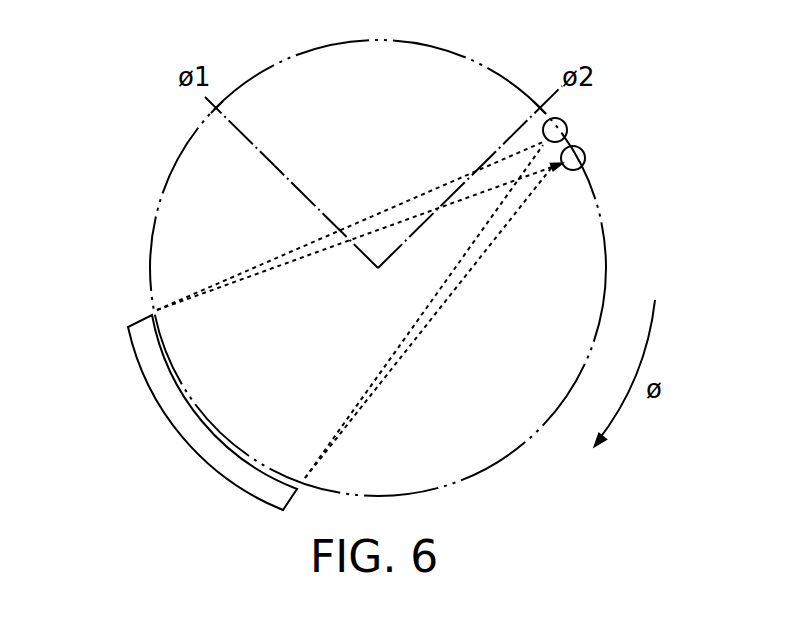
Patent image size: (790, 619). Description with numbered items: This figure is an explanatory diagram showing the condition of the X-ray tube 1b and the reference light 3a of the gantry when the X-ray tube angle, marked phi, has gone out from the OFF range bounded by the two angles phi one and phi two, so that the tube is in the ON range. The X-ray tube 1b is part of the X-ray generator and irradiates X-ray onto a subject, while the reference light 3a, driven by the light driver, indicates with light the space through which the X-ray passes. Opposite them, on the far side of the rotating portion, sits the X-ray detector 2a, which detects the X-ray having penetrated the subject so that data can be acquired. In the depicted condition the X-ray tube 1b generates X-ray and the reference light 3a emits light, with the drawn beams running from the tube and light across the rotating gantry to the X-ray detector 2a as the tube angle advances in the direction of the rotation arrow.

The X-ray tube 1b is at (567, 129).
The reference light 3a is at (585, 162).
The X-ray detector 2a is at (143, 372).